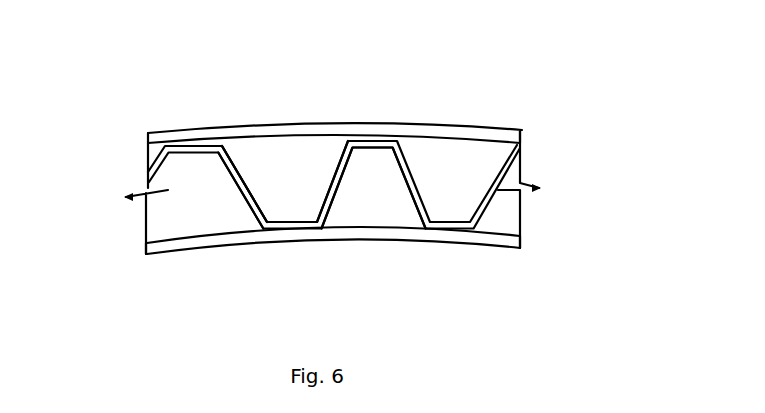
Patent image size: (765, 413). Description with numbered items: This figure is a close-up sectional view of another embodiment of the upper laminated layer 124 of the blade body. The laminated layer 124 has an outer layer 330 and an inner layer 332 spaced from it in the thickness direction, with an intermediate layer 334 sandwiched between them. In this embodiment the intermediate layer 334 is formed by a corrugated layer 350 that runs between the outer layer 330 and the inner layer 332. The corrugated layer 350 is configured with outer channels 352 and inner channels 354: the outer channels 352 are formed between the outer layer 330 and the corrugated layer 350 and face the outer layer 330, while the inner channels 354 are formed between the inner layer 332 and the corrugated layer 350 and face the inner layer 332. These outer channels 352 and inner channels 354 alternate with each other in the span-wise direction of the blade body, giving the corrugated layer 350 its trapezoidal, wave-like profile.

The upper laminated layer 124 is at (76, 31).
The outer layer 330 is at (482, 128).
The inner layer 332 is at (450, 240).
The intermediate layer 334 is at (502, 207).
The corrugated layer 350 is at (252, 180).
The outer channels 352 is at (326, 150).
The inner channels 354 is at (343, 218).